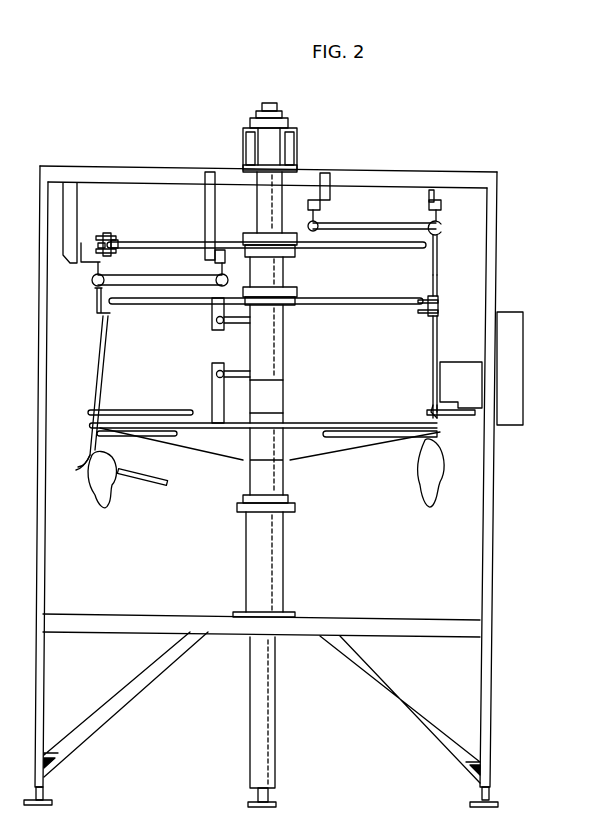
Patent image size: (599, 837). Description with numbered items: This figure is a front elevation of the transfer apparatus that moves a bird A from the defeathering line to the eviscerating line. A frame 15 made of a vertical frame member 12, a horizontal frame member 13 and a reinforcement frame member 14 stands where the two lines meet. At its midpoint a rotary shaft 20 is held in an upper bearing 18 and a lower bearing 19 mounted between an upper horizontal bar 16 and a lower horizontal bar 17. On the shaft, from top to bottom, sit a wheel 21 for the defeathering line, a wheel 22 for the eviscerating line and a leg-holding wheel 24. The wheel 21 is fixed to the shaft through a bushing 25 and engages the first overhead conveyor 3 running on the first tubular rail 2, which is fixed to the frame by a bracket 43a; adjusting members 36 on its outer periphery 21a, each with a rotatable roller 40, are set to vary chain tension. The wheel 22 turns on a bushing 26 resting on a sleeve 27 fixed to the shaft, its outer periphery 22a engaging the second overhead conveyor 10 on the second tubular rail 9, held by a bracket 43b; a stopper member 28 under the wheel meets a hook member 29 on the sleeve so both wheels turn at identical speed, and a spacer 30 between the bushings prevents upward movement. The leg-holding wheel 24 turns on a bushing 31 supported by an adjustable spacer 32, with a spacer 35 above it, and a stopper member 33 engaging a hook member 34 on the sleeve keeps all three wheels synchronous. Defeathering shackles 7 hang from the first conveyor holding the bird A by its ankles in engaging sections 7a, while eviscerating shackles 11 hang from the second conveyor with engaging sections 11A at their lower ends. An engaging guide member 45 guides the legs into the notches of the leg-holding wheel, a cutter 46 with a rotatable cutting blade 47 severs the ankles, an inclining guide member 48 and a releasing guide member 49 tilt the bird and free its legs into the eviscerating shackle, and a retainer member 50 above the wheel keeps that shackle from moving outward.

The first tubular rail 2 is at (375, 225).
The first overhead conveyor 3 is at (441, 250).
The defeathering shackle 7 is at (439, 278).
The engaging sections 7a is at (428, 407).
The second tubular rail 9 is at (180, 278).
The second overhead conveyor 10 is at (95, 297).
The eviscerating shackle 11 is at (103, 350).
The engaging sections 11A is at (82, 463).
The vertical frame member 12 is at (40, 588).
The horizontal frame member 13 is at (372, 180).
The reinforcement frame member 14 is at (143, 688).
The frame 15 is at (285, 475).
The upper horizontal bar 16 is at (243, 138).
The lower horizontal bar 17 is at (128, 618).
The upper bearing 18 is at (284, 118).
The lower bearing 19 is at (278, 556).
The rotary shaft 20 is at (257, 212).
The wheel for the defeathering line 21 is at (372, 249).
The outer periphery 21a is at (113, 238).
The wheel for the eviscerating line 22 is at (355, 305).
The outer periphery 22a is at (425, 300).
The leg-holding wheel 24 is at (355, 428).
The bushing 25 is at (290, 235).
The bushing 26 is at (290, 293).
The sleeve 27 is at (284, 353).
The stopper member 28 is at (212, 310).
The hook member 29 is at (230, 323).
The spacer 30 is at (284, 272).
The bushing 31 is at (284, 418).
The adjustable spacer 32 is at (284, 488).
The stopper member 33 is at (212, 395).
The hook member 34 is at (212, 368).
The spacer 35 is at (284, 390).
The adjusting member 36 is at (118, 252).
The rotatable roller 40 is at (100, 237).
The bracket 43a is at (325, 188).
The bracket 43b is at (73, 195).
The engaging guide member 45 is at (365, 437).
The cutter 46 is at (448, 379).
The cutting blade 47 is at (455, 418).
The inclining guide member 48 is at (152, 484).
The releasing guide member 49 is at (155, 438).
The retainer member 50 is at (130, 410).
The bird A is at (104, 505).